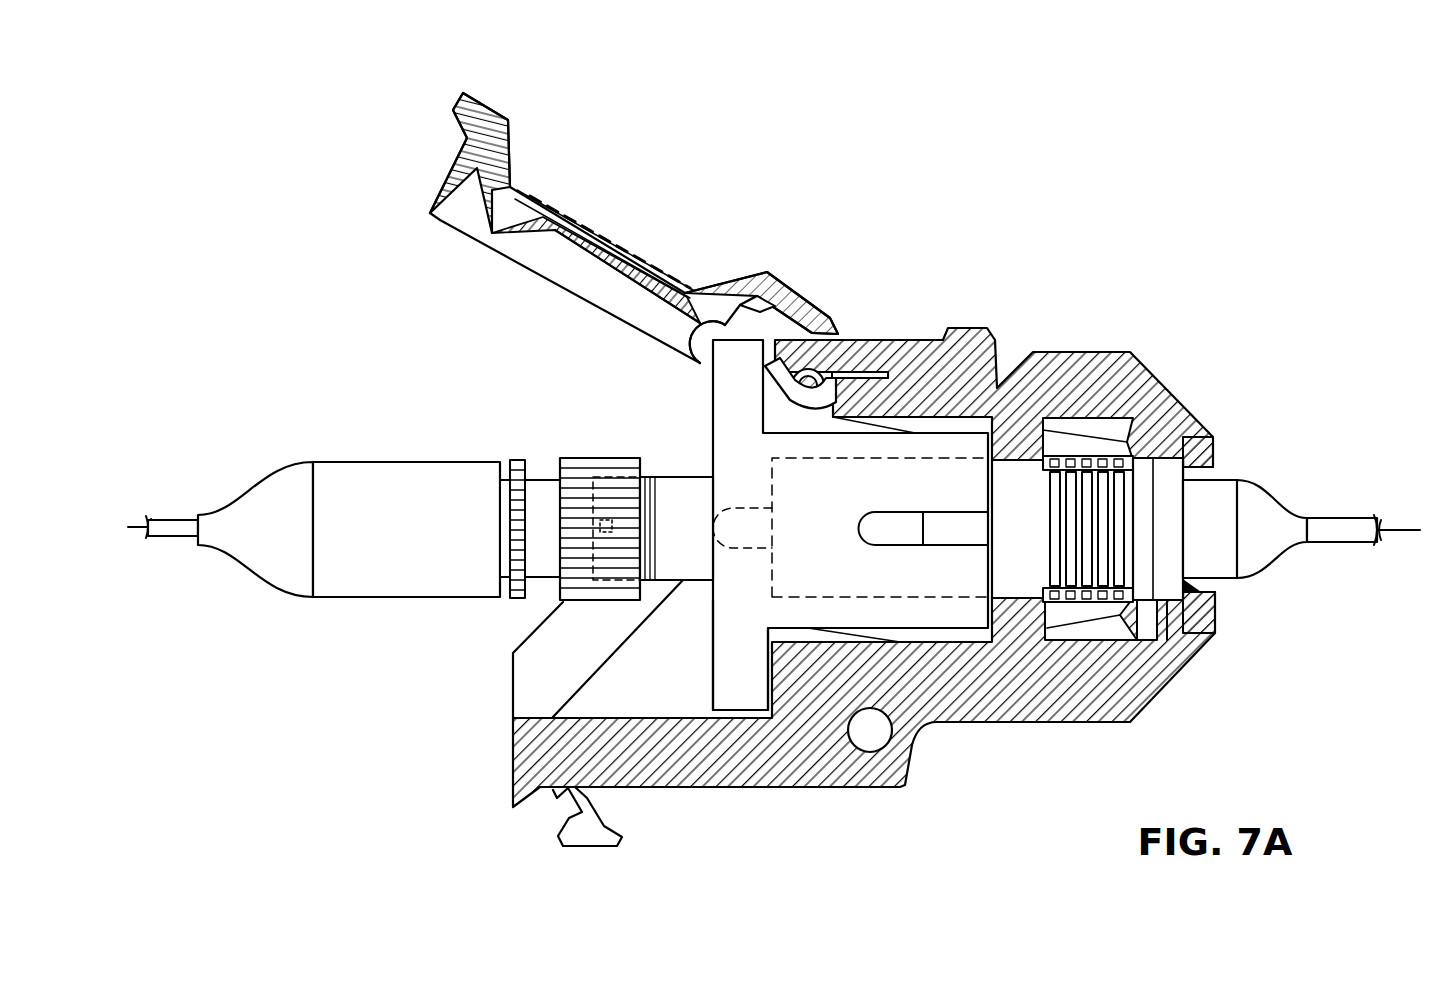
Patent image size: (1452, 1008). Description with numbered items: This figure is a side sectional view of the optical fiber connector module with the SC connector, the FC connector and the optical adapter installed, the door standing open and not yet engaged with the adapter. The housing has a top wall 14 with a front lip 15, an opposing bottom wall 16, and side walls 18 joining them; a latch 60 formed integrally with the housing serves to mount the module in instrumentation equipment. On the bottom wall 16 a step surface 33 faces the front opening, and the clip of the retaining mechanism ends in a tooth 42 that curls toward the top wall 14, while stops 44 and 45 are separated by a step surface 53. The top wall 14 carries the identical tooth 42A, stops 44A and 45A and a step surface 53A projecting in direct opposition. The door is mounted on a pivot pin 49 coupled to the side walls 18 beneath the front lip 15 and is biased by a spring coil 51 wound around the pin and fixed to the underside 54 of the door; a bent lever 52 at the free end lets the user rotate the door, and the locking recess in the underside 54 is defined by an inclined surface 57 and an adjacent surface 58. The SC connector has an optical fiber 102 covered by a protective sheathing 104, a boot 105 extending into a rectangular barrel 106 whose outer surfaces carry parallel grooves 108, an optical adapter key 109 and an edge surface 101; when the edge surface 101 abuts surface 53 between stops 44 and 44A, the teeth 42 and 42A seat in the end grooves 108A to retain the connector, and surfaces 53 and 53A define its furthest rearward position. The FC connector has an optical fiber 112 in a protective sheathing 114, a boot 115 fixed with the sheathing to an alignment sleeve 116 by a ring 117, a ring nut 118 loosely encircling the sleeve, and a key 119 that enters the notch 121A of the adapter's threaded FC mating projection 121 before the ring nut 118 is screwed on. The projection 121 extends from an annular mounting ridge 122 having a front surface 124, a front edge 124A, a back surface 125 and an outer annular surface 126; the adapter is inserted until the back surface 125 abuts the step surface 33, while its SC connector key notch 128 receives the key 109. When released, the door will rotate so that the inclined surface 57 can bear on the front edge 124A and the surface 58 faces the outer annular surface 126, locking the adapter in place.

The top wall 14 is at (1078, 368).
The front lip 15 is at (775, 362).
The bottom wall 16 is at (812, 688).
The side walls 18 is at (556, 658).
The step surface 33 is at (750, 693).
The tooth 42 is at (1120, 596).
The tooth 42A is at (1153, 420).
The stop 44 is at (1167, 603).
The stop 44A is at (1158, 447).
The stop 45 is at (1215, 618).
The stop 45A is at (1213, 455).
The pivot pin 49 is at (825, 348).
The spring coil 51 is at (683, 313).
The bent lever 52 is at (497, 118).
The step surface 53 is at (1195, 590).
The step surface 53A is at (1210, 445).
The underside 54 is at (553, 268).
The inclined surface 57 is at (730, 294).
The surface 58 is at (745, 295).
The latch 60 is at (590, 848).
The edge surface 101 is at (1178, 612).
The optical fiber 102 is at (1395, 537).
The protective sheathing 104 is at (1355, 520).
The boot 105 is at (1280, 522).
The barrel 106 is at (1000, 566).
The parallel grooves 108 is at (1080, 468).
The end grooves 108A is at (1130, 470).
The optical adapter key 109 is at (877, 540).
The optical fiber 112 is at (143, 535).
The protective sheathing 114 is at (167, 522).
The boot 115 is at (382, 540).
The alignment sleeve 116 is at (543, 487).
The ring 117 is at (517, 462).
The ring nut 118 is at (596, 465).
The key 119 is at (617, 530).
The FC mating projection 121 is at (662, 541).
The notch 121A is at (605, 536).
The annular mounting ridge 122 is at (722, 466).
The front surface 124 is at (715, 672).
The front edge 124A is at (715, 382).
The back surface 125 is at (770, 690).
The outer annular surface 126 is at (715, 335).
The SC connector key notch 128 is at (945, 528).